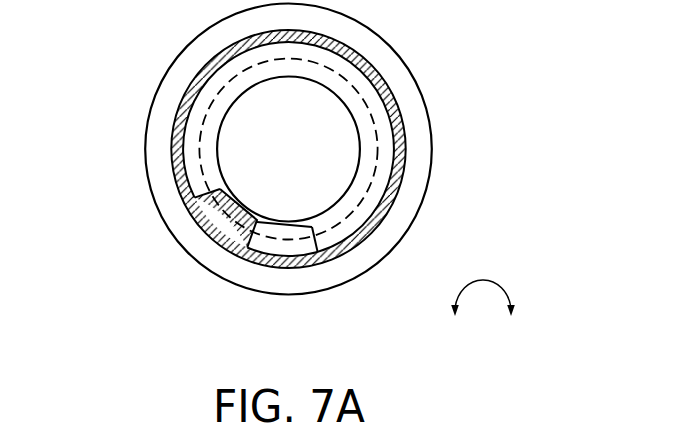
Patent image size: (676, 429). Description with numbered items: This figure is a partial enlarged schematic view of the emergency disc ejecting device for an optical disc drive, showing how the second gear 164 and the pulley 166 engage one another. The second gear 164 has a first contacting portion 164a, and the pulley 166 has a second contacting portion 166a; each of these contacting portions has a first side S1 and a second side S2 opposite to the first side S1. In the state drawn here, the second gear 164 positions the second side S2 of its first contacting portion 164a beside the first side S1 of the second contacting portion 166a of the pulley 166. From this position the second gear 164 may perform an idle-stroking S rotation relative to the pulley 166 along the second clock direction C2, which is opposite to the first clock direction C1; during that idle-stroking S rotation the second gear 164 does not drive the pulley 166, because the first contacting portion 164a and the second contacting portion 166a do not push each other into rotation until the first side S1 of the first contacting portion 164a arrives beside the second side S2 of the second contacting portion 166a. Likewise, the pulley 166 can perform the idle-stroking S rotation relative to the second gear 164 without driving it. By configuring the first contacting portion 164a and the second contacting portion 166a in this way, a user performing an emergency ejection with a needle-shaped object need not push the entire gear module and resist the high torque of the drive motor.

The second gear 164 is at (424, 157).
The first contacting portion 164a is at (284, 245).
The pulley 166 is at (184, 99).
The second contacting portion 166a is at (218, 225).
The idle-stroking rotation S is at (351, 80).
The first side S1 is at (321, 221).
The second side S2 is at (195, 189).
The first clock direction C1 is at (500, 316).
The second clock direction C2 is at (464, 316).